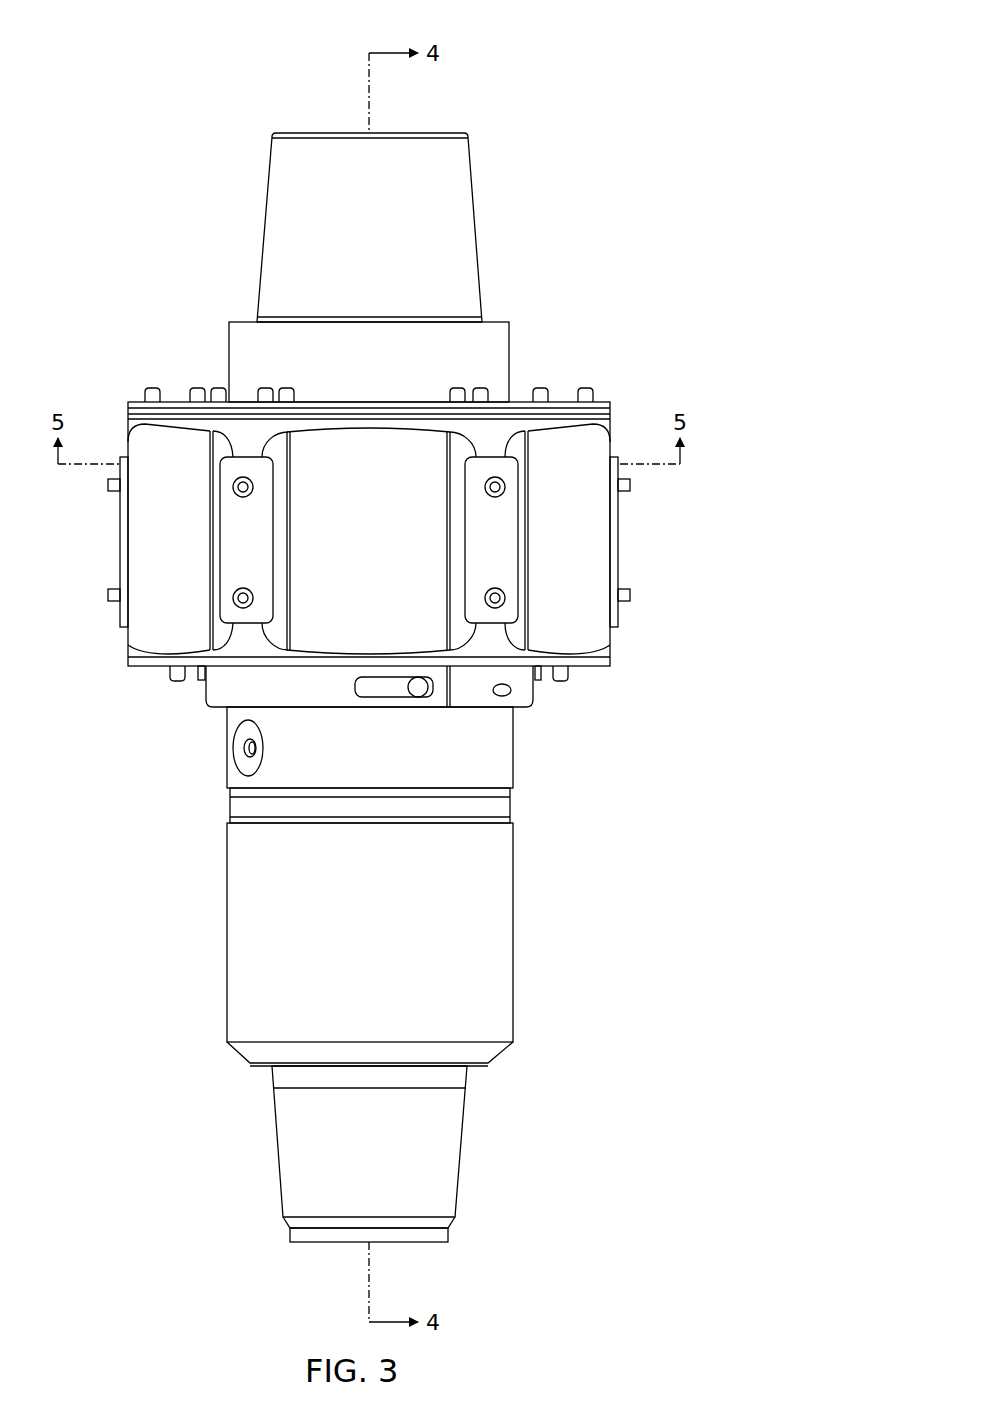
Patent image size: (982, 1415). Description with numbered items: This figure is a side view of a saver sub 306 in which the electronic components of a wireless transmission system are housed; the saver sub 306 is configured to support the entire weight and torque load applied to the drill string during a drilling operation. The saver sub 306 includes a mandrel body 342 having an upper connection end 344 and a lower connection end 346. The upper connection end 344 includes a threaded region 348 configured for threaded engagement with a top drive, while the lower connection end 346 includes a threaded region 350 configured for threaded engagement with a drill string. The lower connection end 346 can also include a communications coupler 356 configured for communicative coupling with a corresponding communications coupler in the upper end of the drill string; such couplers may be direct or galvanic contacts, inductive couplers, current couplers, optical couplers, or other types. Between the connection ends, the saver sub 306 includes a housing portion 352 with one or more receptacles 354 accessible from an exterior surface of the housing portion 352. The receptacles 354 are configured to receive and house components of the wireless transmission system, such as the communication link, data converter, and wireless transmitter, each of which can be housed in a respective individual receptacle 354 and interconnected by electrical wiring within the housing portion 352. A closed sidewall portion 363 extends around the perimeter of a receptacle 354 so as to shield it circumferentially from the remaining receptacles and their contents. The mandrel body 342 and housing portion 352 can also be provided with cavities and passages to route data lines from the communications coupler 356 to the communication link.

The saver sub 306 is at (557, 38).
The upper connection end 344 is at (531, 143).
The threaded region 348 is at (476, 228).
The housing portion 352 is at (710, 455).
The receptacles 354 is at (594, 550).
The closed sidewall portion 363 is at (243, 455).
The mandrel body 342 is at (513, 925).
The lower connection end 346 is at (492, 1123).
The threaded region 350 is at (465, 1152).
The communications coupler 356 is at (305, 1252).